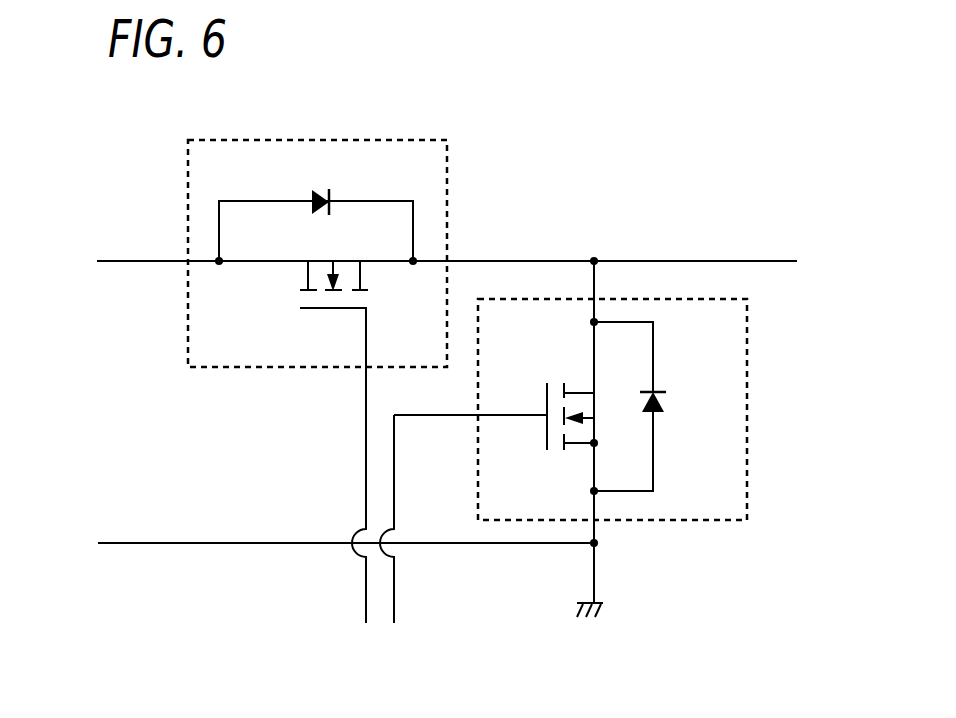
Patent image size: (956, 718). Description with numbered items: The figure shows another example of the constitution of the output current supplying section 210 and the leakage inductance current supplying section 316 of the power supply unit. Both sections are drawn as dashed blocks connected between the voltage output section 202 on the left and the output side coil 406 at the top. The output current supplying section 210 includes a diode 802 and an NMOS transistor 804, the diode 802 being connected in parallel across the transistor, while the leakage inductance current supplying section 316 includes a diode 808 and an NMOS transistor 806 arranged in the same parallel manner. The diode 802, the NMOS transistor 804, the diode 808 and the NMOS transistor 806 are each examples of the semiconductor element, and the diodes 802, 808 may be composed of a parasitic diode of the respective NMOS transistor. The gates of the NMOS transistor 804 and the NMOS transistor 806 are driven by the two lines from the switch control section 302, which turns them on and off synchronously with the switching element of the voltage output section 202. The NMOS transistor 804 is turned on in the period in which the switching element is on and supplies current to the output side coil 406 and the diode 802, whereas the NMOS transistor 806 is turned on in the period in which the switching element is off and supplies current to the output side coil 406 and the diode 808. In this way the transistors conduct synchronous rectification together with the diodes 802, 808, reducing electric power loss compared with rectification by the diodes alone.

The output current supplying section 210 is at (447, 158).
The leakage inductance current supplying section 316 is at (747, 382).
The diode 802 is at (318, 196).
The NMOS transistor 804 is at (313, 308).
The NMOS transistor 806 is at (549, 397).
The diode 808 is at (655, 391).
The output side coil 406 is at (476, 261).
The voltage output section 202 is at (95, 247).
The switch control section 302 is at (418, 627).